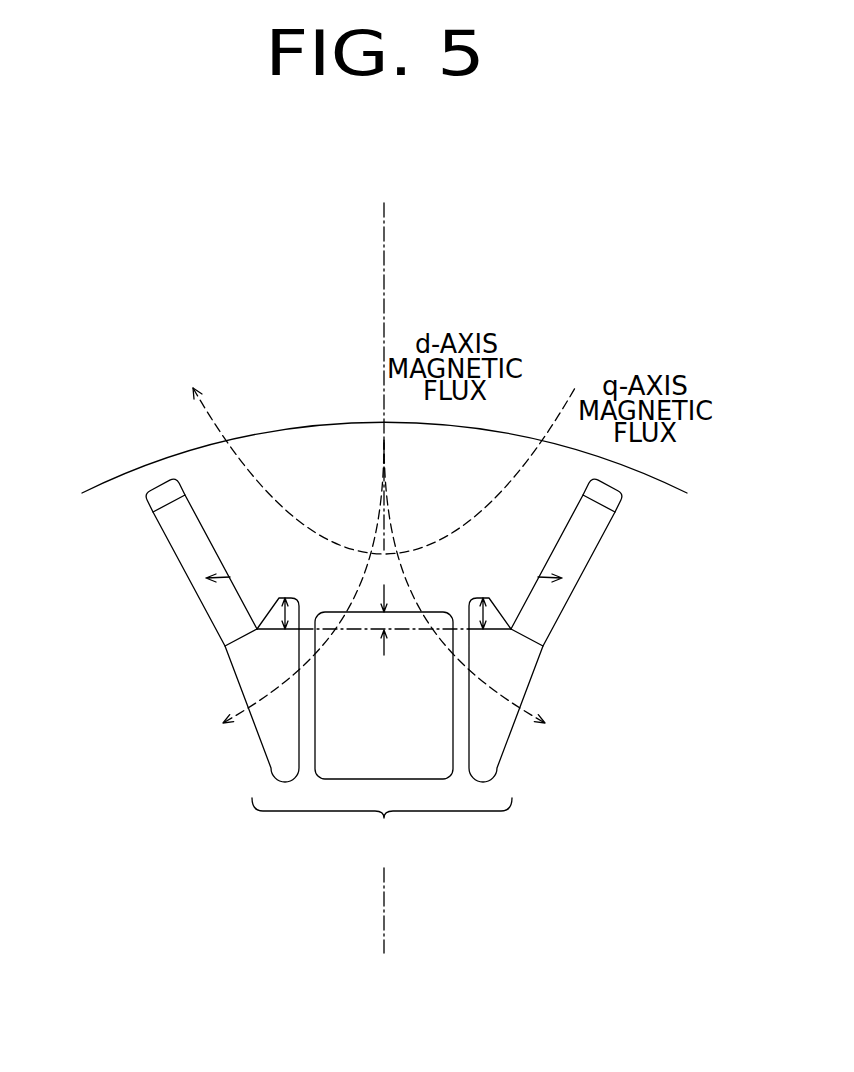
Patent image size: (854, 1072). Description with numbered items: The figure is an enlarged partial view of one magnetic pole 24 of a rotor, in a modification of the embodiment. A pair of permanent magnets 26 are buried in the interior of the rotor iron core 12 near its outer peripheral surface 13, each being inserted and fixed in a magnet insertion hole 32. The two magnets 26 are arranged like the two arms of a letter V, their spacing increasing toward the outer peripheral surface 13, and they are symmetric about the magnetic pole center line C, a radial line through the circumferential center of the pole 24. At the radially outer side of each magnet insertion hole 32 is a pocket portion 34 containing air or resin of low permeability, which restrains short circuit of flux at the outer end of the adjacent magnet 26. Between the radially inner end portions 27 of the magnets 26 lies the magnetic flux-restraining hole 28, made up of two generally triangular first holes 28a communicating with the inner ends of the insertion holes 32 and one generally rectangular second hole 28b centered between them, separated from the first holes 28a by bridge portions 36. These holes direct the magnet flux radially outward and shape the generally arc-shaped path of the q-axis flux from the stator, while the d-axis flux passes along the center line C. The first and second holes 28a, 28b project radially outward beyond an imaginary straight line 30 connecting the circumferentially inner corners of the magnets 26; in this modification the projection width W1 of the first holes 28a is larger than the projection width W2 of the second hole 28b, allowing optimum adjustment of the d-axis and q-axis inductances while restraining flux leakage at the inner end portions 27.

The rotor iron core 12 is at (265, 432).
The outer peripheral surface 13 is at (348, 422).
The magnetic pole 24 is at (498, 453).
The permanent magnet 26 is at (230, 577).
The radially inner end portion 27 is at (236, 633).
The magnetic flux-restraining hole 28 is at (382, 827).
The first hole 28a is at (383, 689).
The second hole 28b is at (384, 646).
The imaginary straight line 30 is at (411, 650).
The magnet insertion hole 32 is at (193, 572).
The pocket portion 34 is at (170, 482).
The bridge portion 36 is at (307, 747).
The magnetic pole center line C is at (384, 265).
The projection width of first holes W1 is at (290, 598).
The projection width of second hole W2 is at (390, 620).